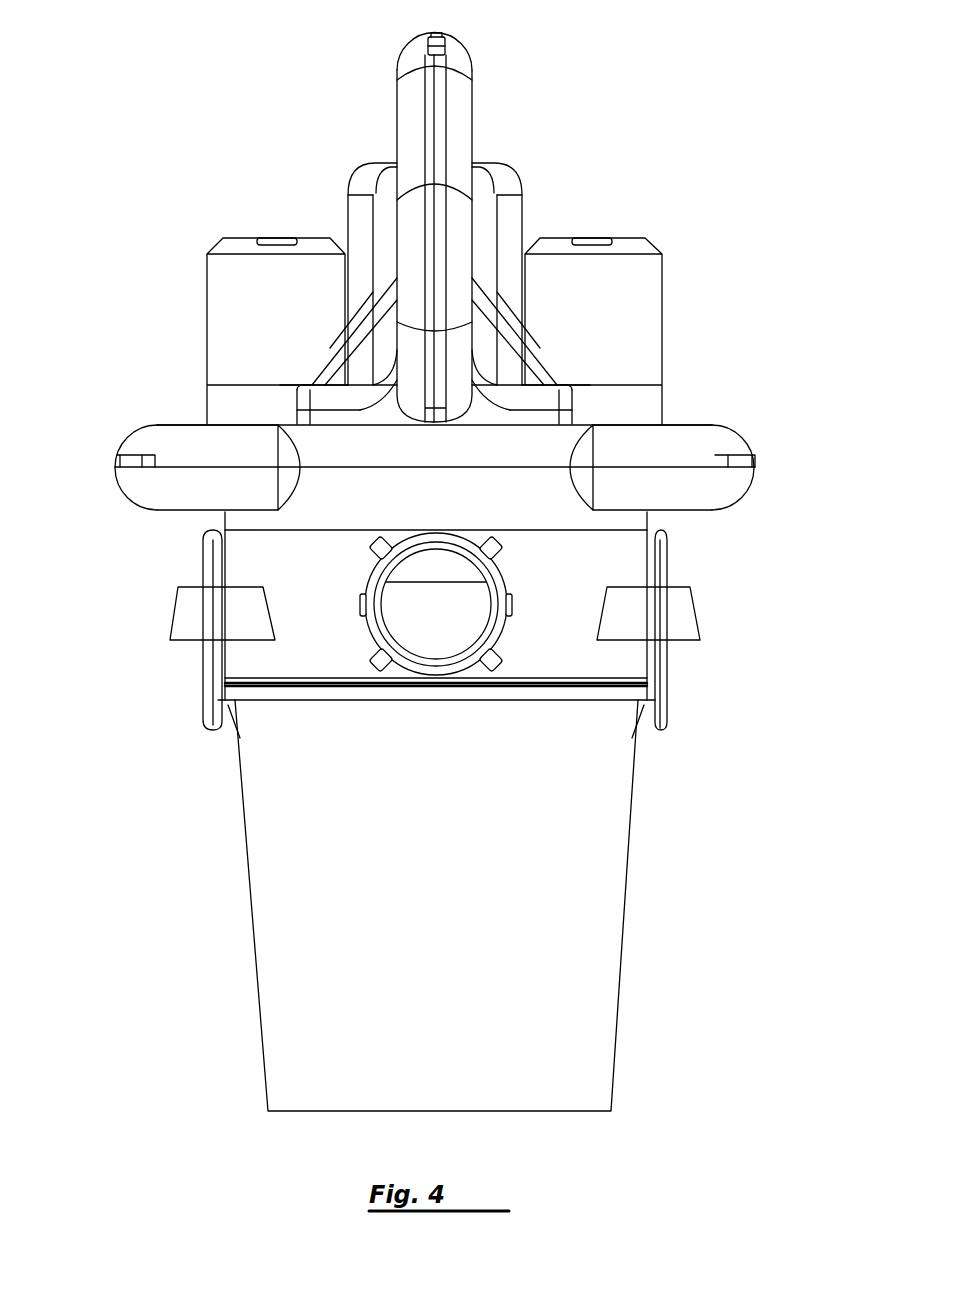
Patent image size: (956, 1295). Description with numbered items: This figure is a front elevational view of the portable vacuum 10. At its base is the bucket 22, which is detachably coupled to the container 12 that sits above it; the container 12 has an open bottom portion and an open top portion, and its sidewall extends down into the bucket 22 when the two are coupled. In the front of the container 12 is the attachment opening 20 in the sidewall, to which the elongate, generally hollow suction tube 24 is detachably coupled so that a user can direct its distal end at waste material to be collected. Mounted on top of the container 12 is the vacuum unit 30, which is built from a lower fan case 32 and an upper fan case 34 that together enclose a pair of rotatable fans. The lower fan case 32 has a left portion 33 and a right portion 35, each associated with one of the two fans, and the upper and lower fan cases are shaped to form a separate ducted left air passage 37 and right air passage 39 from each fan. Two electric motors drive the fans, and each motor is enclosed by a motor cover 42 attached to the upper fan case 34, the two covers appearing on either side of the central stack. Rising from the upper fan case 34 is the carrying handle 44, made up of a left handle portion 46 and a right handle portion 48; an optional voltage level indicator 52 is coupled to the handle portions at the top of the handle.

The portable vacuum 10 is at (750, 238).
The container 12 is at (698, 615).
The attachment opening 20 is at (370, 548).
The bucket 22 is at (242, 800).
The suction tube 24 is at (504, 575).
The vacuum unit 30 is at (110, 463).
The lower fan case 32 is at (747, 490).
The left portion 33 is at (142, 510).
The upper fan case 34 is at (747, 437).
The right portion 35 is at (695, 511).
The left air passage 37 is at (150, 424).
The right air passage 39 is at (703, 424).
The motor cover 42 is at (207, 298).
The carrying handle 44 is at (480, 77).
The left handle portion 46 is at (397, 112).
The right handle portion 48 is at (472, 134).
The voltage level indicator 52 is at (438, 34).